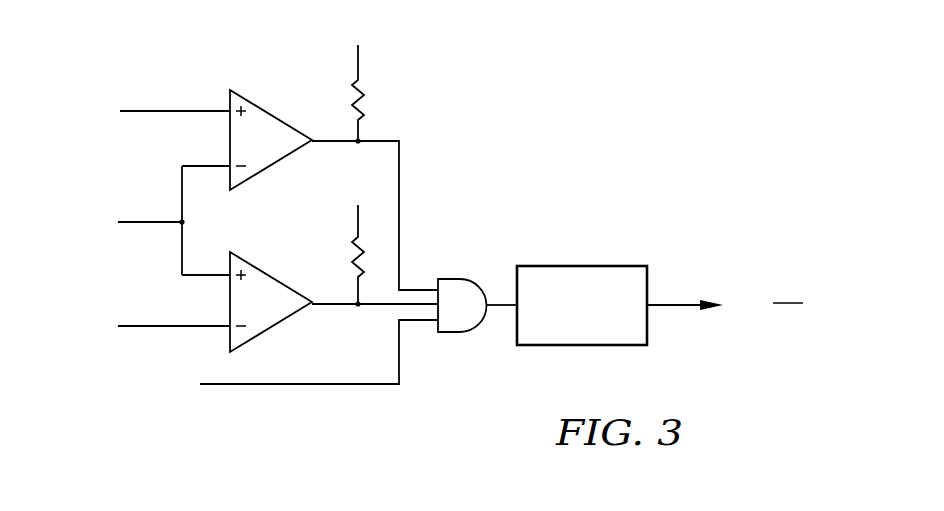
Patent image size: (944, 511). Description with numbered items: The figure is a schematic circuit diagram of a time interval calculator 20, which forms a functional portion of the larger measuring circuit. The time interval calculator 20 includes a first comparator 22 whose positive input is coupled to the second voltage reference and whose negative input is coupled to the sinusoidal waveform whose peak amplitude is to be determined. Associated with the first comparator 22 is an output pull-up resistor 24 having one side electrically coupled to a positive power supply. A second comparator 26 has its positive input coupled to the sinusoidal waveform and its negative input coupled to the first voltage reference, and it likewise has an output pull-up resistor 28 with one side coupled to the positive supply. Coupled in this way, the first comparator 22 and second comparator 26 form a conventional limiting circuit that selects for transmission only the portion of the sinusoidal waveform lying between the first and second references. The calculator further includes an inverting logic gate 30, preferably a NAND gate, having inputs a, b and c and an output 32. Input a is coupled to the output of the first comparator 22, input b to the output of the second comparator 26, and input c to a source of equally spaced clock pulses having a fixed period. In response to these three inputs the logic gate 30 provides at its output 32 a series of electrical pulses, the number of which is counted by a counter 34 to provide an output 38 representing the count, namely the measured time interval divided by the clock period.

The time interval calculator 20 is at (527, 173).
The first comparator 22 is at (277, 117).
The output pull-up resistor 24 is at (368, 86).
The second comparator 26 is at (275, 279).
The output pull-up resistor 28 is at (356, 259).
The inverting logic gate 30 is at (478, 265).
The output 32 is at (484, 312).
The counter 34 is at (587, 266).
The output 38 is at (648, 304).